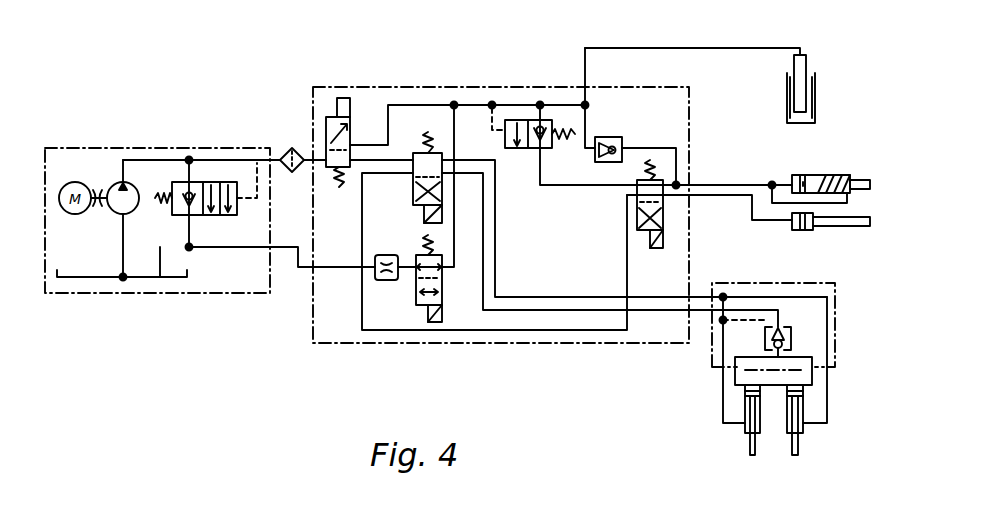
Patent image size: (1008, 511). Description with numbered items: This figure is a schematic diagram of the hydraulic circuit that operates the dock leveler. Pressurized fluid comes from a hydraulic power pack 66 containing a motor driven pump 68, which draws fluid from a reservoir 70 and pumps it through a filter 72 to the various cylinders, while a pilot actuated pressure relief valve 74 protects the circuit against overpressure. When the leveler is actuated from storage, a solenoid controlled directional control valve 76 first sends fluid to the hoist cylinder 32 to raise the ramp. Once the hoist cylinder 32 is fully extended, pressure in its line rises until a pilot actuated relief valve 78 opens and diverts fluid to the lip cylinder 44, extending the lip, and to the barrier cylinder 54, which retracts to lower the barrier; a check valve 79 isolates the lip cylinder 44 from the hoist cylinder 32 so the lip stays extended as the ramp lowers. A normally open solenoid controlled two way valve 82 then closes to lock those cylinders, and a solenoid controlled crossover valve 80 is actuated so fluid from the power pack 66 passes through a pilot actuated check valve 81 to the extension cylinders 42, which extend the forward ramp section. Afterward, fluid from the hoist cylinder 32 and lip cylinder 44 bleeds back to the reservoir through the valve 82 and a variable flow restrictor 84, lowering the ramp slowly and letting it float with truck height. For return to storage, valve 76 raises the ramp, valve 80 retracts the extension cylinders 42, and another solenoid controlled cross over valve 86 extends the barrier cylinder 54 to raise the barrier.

The hoist cylinder 32 is at (787, 88).
The extension cylinders 42 is at (805, 400).
The lip cylinder 44 is at (792, 178).
The barrier cylinder 54 is at (852, 211).
The hydraulic power pack 66 is at (68, 293).
The motor driven pump 68 is at (118, 183).
The reservoir 70 is at (100, 277).
The filter 72 is at (292, 148).
The pilot actuated pressure relief valve 74 is at (212, 213).
The solenoid controlled directional control valve 76 is at (348, 131).
The pilot actuated relief valve 78 is at (522, 149).
The check valve 79 is at (607, 136).
The solenoid controlled crossover valve 80 is at (413, 192).
The pilot actuated check valve 81 is at (791, 333).
The solenoid controlled two way valve 82 is at (421, 306).
The variable flow restrictor 84 is at (385, 283).
The solenoid controlled cross over valve 86 is at (637, 224).